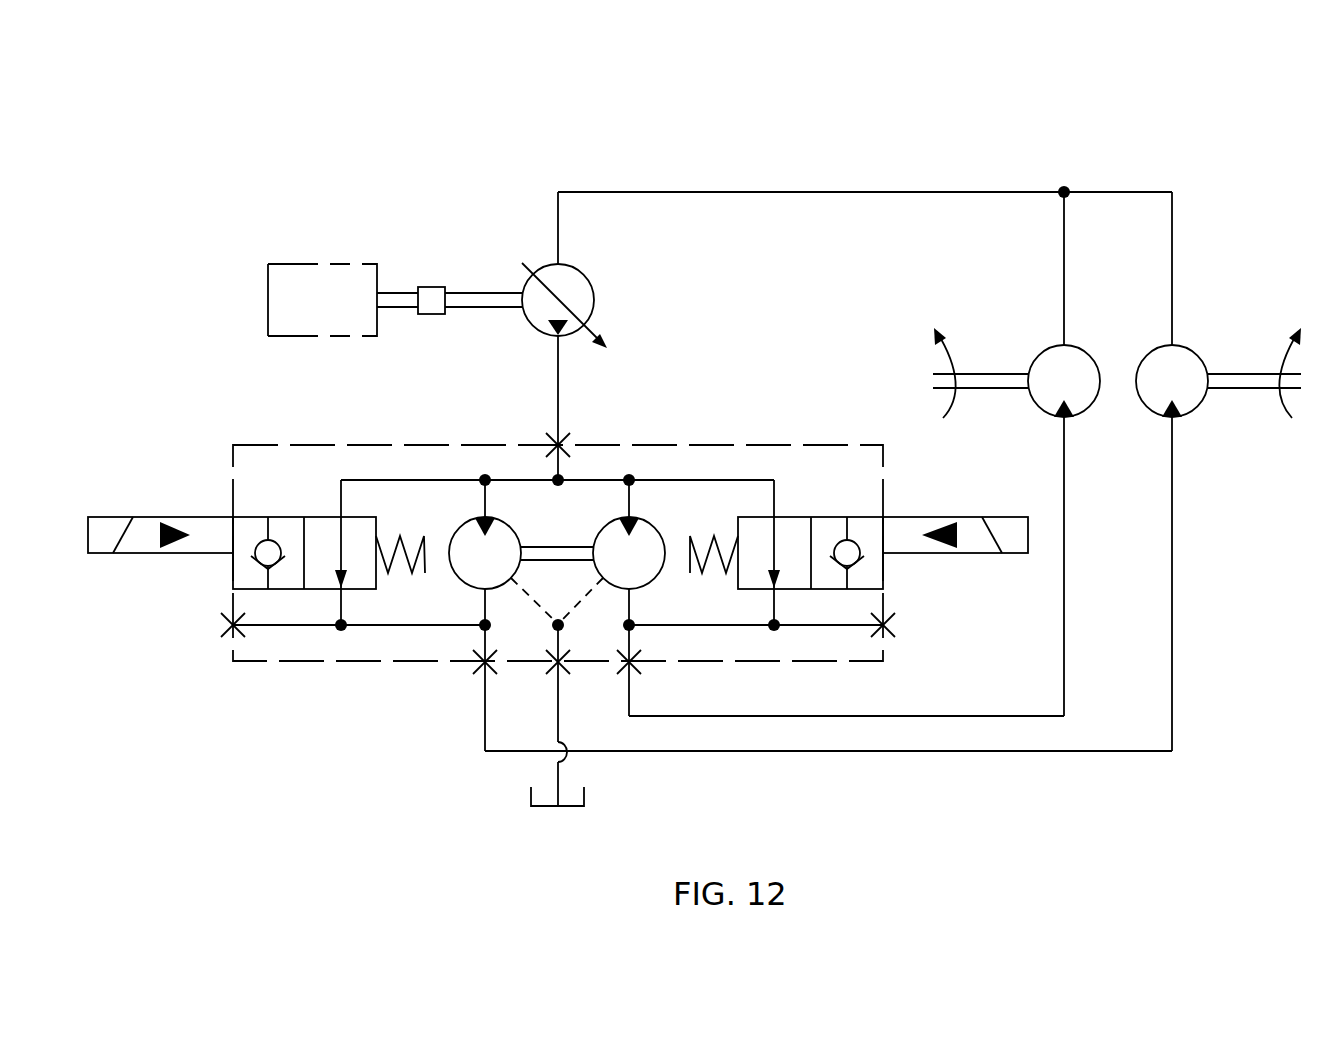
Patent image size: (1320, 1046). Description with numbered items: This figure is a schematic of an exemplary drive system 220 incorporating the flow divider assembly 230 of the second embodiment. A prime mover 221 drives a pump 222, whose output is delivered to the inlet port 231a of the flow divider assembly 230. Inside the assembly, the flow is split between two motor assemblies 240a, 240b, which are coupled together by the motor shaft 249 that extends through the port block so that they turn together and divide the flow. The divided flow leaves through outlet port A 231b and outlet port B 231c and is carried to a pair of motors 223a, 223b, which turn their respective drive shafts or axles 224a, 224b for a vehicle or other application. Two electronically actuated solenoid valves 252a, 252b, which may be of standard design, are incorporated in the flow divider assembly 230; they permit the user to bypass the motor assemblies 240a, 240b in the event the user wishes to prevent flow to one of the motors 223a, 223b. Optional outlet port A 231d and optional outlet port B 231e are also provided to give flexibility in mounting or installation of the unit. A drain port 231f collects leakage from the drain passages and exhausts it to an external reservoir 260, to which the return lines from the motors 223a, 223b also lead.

The drive system 220 is at (232, 148).
The prime mover 221 is at (362, 264).
The pump 222 is at (576, 269).
The motor 223a is at (1196, 356).
The motor 223b is at (1040, 356).
The drive shaft or axle 224a is at (1246, 389).
The drive shaft or axle 224b is at (990, 389).
The flow divider assembly 230 is at (252, 445).
The inlet port 231a is at (562, 438).
The outlet port A 231b is at (481, 673).
The outlet port B 231c is at (637, 673).
The optional outlet port A 231d is at (227, 637).
The optional outlet port B 231e is at (888, 637).
The drain port 231f is at (562, 674).
The motor assembly 240a is at (455, 536).
The motor assembly 240b is at (659, 536).
The motor shaft 249 is at (558, 546).
The solenoid valve 252a is at (287, 517).
The solenoid valve 252b is at (829, 517).
The external reservoir 260 is at (531, 800).